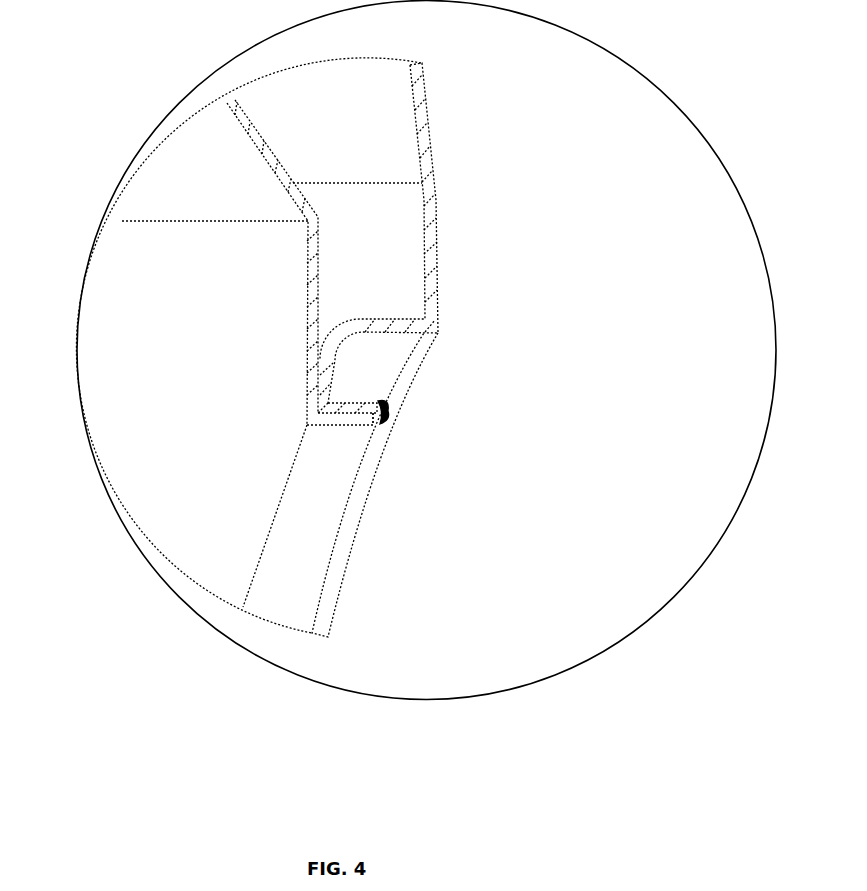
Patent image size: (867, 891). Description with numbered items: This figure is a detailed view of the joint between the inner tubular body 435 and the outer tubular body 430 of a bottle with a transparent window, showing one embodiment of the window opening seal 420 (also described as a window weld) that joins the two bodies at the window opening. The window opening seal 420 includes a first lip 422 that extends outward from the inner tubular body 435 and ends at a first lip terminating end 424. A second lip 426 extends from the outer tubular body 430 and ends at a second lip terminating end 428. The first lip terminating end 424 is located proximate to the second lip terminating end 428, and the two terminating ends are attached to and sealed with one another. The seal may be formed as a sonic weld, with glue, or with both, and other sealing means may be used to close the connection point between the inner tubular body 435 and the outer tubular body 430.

The window opening seal 420 is at (400, 423).
The first lip 422 is at (332, 427).
The first lip terminating end 424 is at (372, 425).
The second lip 426 is at (357, 402).
The second lip terminating end 428 is at (383, 400).
The outer tubular body 430 is at (437, 155).
The inner tubular body 435 is at (318, 263).